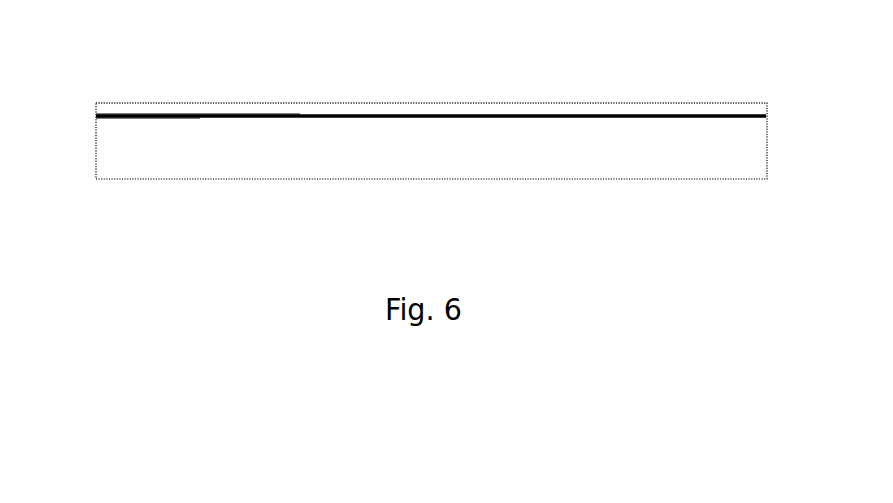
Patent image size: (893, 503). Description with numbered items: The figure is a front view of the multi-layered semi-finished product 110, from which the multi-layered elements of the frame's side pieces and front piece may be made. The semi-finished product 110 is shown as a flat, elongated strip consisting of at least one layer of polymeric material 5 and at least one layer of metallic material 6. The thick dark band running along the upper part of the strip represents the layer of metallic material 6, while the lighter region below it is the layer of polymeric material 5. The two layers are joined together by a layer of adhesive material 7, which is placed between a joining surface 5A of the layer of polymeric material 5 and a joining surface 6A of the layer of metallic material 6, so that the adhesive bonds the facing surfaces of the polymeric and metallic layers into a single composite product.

The multi-layered semi-finished product 110 is at (108, 80).
The layer of polymeric material 5 is at (619, 163).
The joining surface of the layer of polymeric material 5A is at (662, 115).
The layer of metallic material 6 is at (303, 103).
The joining surface of the layer of metallic material 6A is at (197, 116).
The layer of adhesive material 7 is at (119, 116).